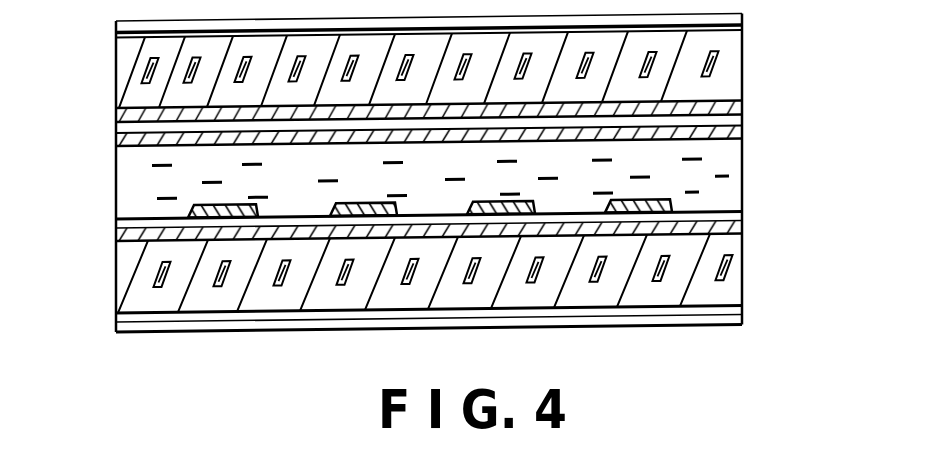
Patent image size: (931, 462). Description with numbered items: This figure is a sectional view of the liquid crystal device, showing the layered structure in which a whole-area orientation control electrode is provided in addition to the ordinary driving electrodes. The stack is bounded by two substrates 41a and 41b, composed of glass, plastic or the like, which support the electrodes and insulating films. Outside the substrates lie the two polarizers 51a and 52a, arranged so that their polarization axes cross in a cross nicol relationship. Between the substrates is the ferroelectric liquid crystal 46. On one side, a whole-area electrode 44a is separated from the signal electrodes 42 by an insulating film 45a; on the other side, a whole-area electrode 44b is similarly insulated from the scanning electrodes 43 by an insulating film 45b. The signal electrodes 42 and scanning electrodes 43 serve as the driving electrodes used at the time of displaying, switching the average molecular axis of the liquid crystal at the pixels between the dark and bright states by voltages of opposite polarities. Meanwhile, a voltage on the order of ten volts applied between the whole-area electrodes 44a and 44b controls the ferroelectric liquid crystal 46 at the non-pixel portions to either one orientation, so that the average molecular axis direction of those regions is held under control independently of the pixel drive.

The ferroelectric liquid crystal 46 is at (140, 184).
The polarizer 51a is at (742, 15).
The substrate 41a is at (728, 66).
The whole-area electrode 44a is at (742, 107).
The insulating film 45a is at (742, 125).
The signal electrodes 42 is at (745, 132).
The scanning electrodes 43 is at (673, 206).
The insulating film 45b is at (743, 220).
The whole-area electrode 44b is at (745, 232).
The substrate 41b is at (730, 285).
The polarizer 52a is at (742, 318).